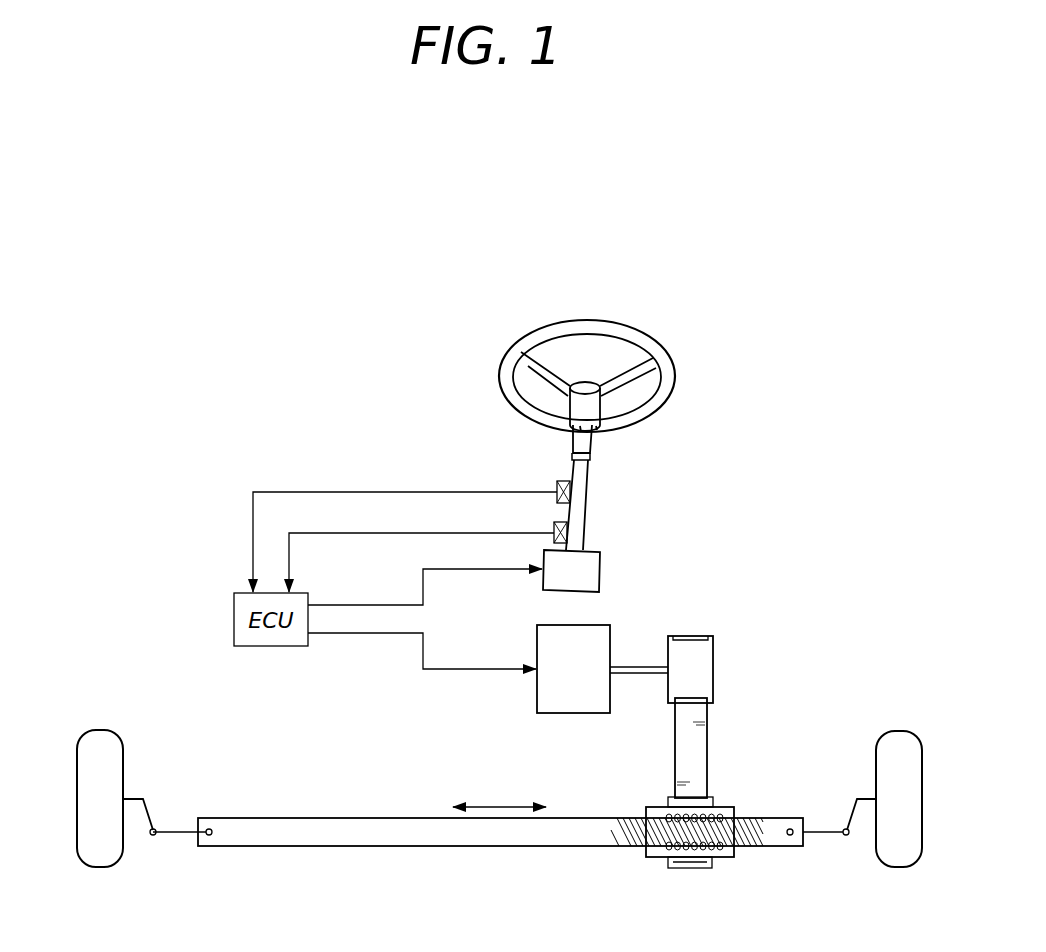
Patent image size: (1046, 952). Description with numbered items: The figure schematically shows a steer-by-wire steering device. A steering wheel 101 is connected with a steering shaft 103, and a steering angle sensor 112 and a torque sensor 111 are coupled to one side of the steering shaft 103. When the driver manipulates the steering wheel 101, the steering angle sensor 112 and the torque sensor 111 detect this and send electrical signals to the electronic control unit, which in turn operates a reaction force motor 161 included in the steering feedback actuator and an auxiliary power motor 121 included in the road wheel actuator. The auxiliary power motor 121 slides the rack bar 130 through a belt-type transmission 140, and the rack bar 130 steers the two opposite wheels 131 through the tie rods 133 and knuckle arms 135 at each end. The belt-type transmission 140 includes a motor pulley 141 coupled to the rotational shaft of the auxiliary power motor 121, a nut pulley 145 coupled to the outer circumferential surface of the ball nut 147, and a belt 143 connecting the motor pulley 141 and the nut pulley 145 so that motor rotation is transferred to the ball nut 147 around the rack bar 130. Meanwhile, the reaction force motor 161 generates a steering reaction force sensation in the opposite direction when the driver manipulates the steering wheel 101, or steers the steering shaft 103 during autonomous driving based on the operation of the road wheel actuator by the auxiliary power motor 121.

The steering wheel 101 is at (665, 381).
The steering shaft 103 is at (590, 500).
The torque sensor 111 is at (553, 523).
The steering angle sensor 112 is at (556, 482).
The auxiliary power motor 121 is at (536, 690).
The rack bar 130 is at (413, 840).
The wheel 131 is at (113, 760).
The tie rod 133 is at (170, 836).
The knuckle arm 135 is at (153, 813).
The belt-type transmission 140 is at (740, 632).
The motor pulley 141 is at (705, 667).
The belt 143 is at (700, 745).
The nut pulley 145 is at (713, 802).
The ball nut 147 is at (724, 858).
The reaction force motor 161 is at (600, 571).